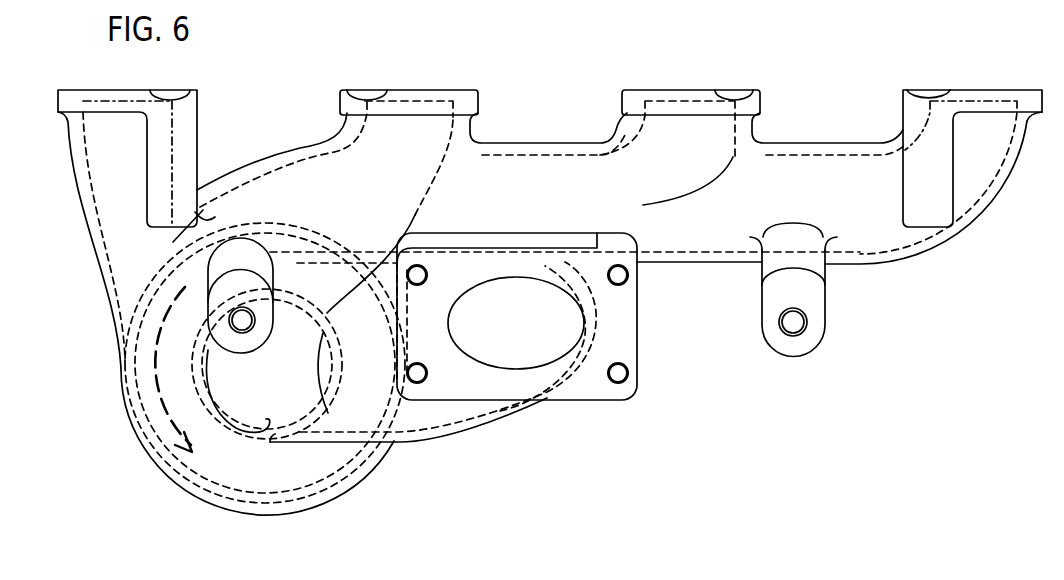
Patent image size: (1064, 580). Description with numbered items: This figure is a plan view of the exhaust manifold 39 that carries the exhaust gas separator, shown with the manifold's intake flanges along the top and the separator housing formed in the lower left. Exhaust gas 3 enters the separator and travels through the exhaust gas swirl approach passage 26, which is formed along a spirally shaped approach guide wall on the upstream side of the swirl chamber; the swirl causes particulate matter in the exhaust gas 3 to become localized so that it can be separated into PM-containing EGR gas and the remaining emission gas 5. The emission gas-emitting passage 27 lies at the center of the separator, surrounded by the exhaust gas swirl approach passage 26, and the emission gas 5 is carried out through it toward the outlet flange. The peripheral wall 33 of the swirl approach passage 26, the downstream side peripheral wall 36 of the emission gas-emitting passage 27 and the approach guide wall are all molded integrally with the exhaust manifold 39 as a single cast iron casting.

The exhaust gas 3 is at (155, 364).
The emission gas 5 is at (357, 355).
The exhaust gas swirl approach passage 26 is at (173, 442).
The emission gas-emitting passage 27 is at (430, 417).
The peripheral wall 33 is at (183, 487).
The downstream side peripheral wall 36 is at (243, 433).
The exhaust manifold 39 is at (797, 170).